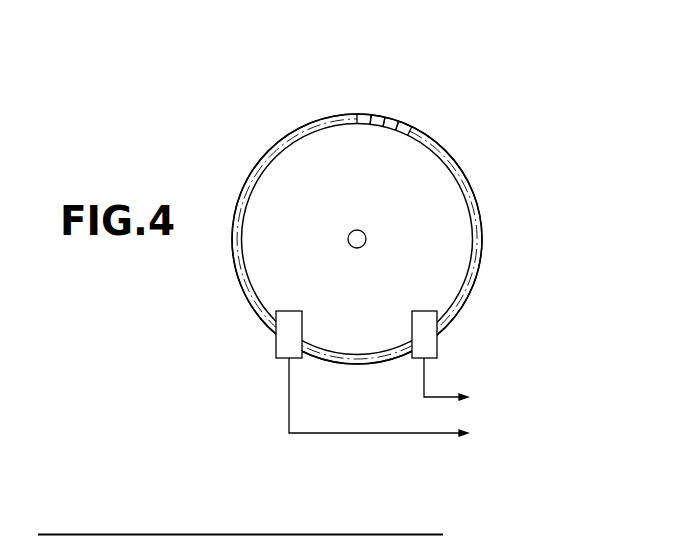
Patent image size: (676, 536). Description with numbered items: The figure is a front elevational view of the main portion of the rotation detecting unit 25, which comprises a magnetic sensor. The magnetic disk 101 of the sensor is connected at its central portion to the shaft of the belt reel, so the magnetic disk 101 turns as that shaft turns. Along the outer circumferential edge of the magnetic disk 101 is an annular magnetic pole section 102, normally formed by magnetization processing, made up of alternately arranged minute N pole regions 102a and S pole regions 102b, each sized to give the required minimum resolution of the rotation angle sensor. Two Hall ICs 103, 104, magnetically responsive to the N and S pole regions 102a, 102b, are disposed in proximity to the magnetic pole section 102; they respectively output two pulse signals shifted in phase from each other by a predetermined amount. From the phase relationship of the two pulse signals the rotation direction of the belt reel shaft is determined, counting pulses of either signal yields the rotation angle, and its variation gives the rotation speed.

The rotation detecting unit 25 is at (262, 135).
The magnetic disk 101 is at (430, 185).
The annular magnetic pole section 102 is at (477, 205).
The N pole region 102a is at (362, 112).
The S pole region 102b is at (377, 112).
The Hall IC 103 is at (424, 343).
The Hall IC 104 is at (289, 343).